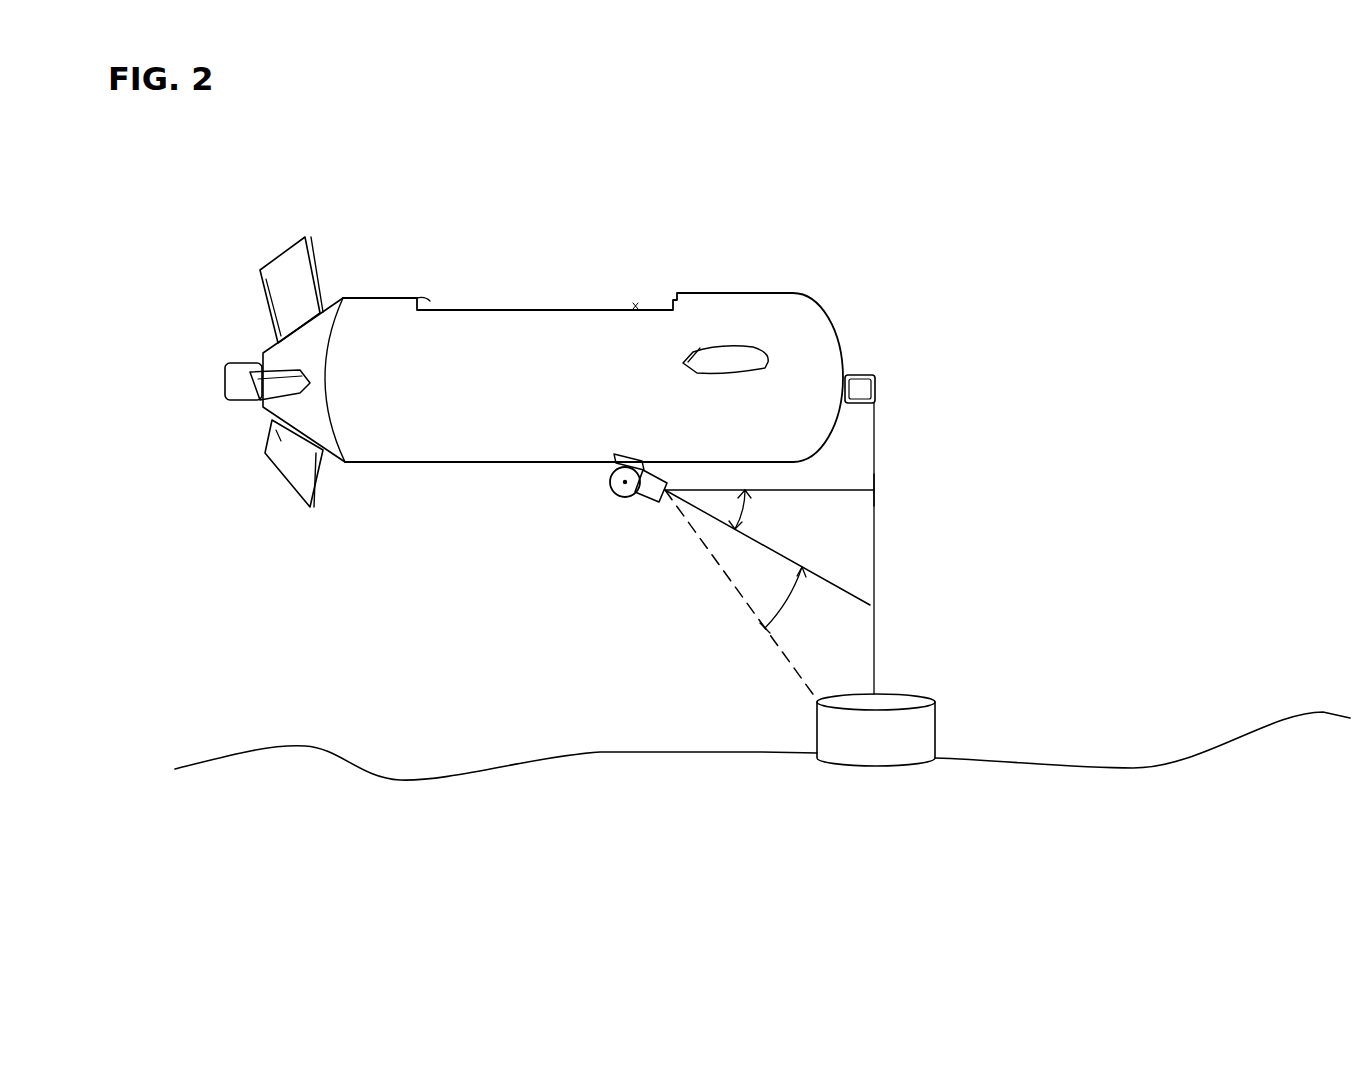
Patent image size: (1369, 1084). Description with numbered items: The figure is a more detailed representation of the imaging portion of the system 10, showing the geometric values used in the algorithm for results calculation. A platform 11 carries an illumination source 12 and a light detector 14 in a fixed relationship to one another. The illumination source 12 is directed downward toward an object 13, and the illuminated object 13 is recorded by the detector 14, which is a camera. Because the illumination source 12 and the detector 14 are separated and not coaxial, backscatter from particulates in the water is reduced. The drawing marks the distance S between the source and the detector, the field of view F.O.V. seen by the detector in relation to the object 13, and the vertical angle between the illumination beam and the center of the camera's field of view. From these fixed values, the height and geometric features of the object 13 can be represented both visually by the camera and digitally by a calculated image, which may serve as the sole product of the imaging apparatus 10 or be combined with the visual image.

The system 10 is at (822, 183).
The platform 11 is at (556, 306).
The illumination source 12 is at (875, 388).
The object 13 is at (935, 700).
The light detector 14 is at (620, 497).
The distance between the source and the detector S is at (825, 490).
The field of view F.O.V. is at (765, 628).